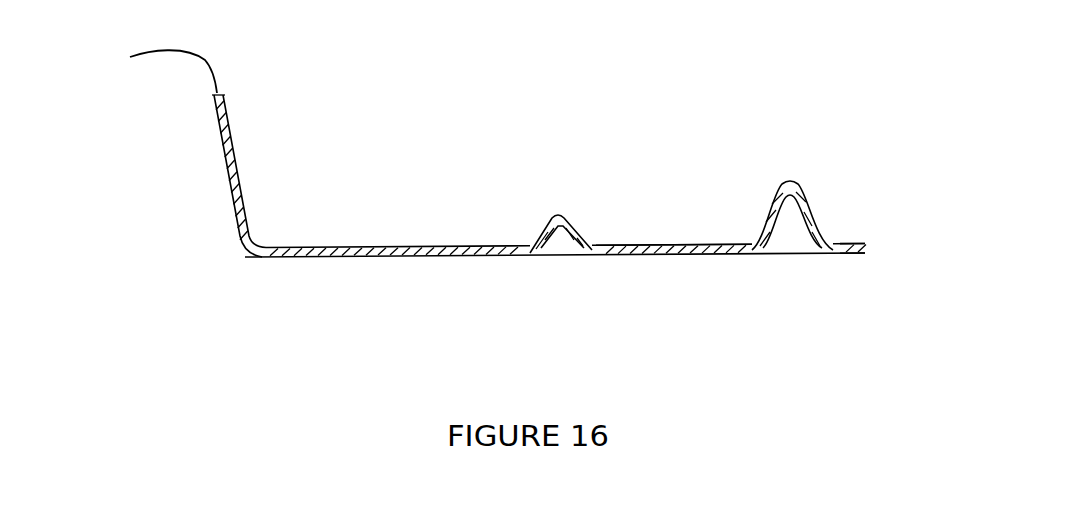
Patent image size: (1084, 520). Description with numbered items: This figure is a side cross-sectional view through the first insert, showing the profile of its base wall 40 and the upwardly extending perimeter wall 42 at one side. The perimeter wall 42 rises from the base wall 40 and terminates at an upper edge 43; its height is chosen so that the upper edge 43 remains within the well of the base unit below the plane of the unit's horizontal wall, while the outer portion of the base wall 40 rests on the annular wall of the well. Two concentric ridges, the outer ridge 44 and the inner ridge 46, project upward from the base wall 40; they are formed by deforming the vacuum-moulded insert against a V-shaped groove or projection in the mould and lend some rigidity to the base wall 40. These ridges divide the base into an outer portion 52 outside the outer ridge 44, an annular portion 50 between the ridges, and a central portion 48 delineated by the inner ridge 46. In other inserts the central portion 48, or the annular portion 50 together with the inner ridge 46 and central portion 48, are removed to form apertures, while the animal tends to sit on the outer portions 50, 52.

The base wall 40 is at (305, 258).
The perimeter wall 42 is at (233, 130).
The upper edge 43 is at (144, 57).
The outer ridge 44 is at (560, 248).
The inner ridge 46 is at (797, 222).
The central portion 48 is at (858, 253).
The annular portion 50 is at (662, 258).
The outer portion 52 is at (380, 257).